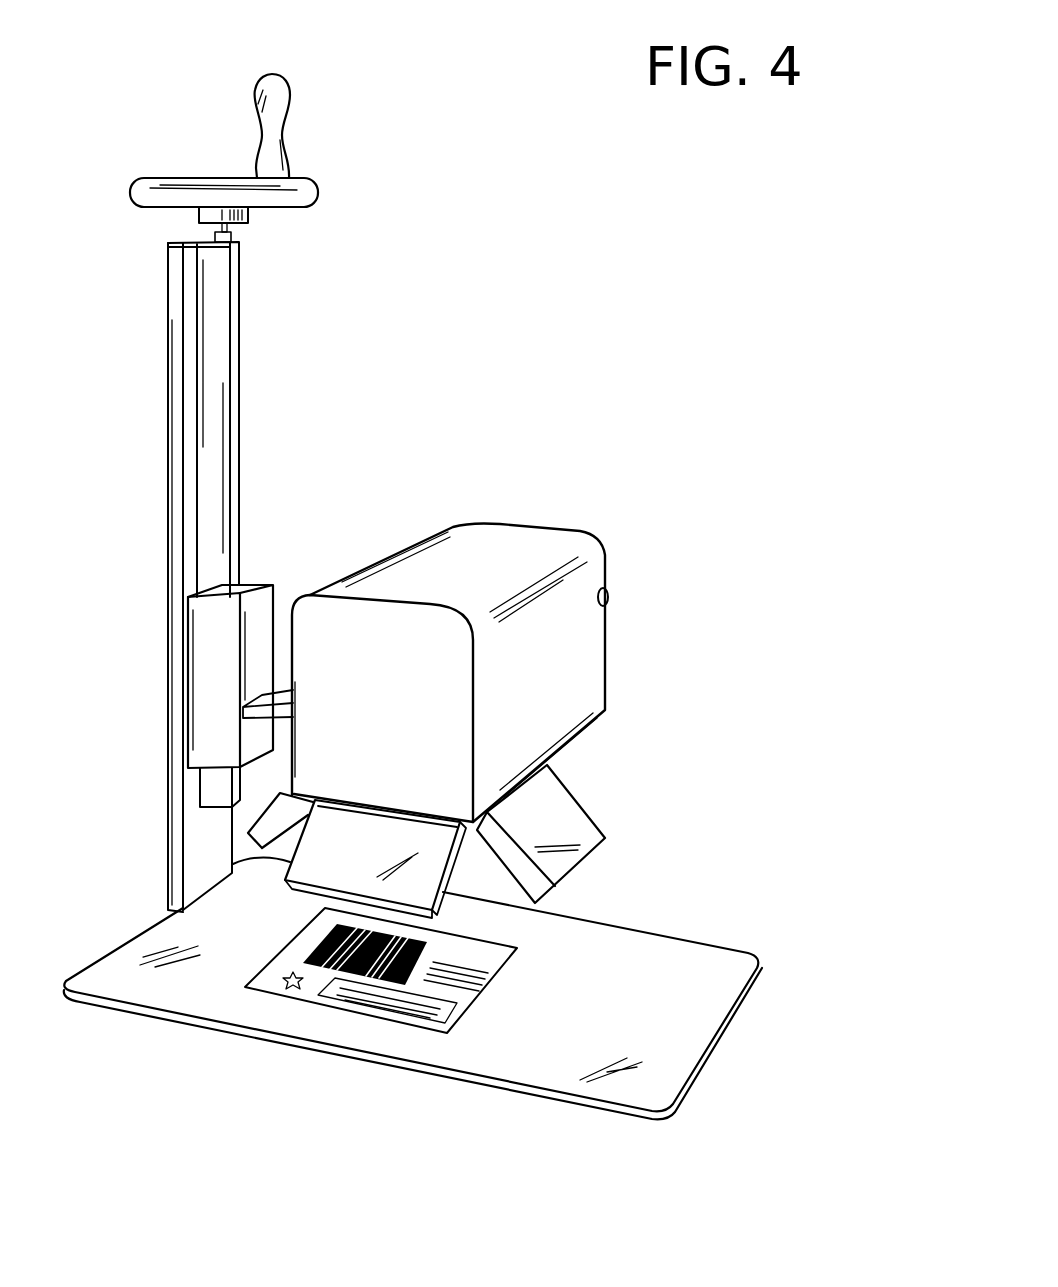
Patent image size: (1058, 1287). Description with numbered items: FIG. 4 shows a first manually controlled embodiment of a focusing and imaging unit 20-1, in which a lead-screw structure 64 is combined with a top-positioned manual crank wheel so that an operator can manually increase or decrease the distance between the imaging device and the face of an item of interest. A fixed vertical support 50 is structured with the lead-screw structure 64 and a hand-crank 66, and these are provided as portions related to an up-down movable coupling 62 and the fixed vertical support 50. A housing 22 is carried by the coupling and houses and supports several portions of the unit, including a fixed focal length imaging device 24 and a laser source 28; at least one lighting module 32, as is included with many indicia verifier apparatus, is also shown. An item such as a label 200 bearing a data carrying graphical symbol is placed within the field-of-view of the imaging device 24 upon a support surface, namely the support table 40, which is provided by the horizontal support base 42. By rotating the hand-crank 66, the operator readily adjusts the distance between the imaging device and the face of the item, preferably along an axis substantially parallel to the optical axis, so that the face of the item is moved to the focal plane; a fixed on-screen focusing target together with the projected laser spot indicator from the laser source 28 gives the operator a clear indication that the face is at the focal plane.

The focusing and imaging unit 20-1 is at (678, 397).
The housing 22 is at (522, 548).
The imaging device 24 is at (613, 608).
The laser source 28 is at (615, 663).
The lighting module 32 is at (565, 812).
The support table 40 is at (658, 998).
The horizontal support base 42 is at (313, 1028).
The fixed vertical support 50 is at (172, 516).
The up-down movable coupling 62 is at (263, 572).
The lead-screw structure 64 is at (248, 438).
The hand-crank 66 is at (312, 212).
The label 200 is at (493, 958).